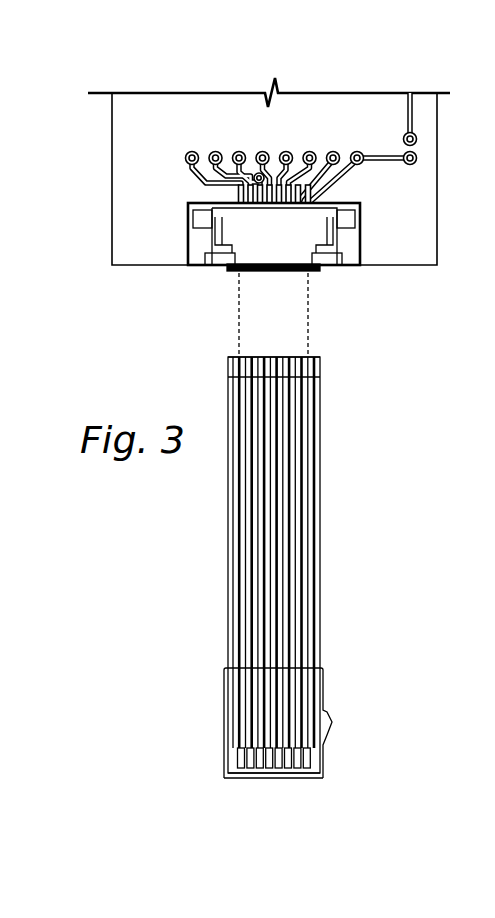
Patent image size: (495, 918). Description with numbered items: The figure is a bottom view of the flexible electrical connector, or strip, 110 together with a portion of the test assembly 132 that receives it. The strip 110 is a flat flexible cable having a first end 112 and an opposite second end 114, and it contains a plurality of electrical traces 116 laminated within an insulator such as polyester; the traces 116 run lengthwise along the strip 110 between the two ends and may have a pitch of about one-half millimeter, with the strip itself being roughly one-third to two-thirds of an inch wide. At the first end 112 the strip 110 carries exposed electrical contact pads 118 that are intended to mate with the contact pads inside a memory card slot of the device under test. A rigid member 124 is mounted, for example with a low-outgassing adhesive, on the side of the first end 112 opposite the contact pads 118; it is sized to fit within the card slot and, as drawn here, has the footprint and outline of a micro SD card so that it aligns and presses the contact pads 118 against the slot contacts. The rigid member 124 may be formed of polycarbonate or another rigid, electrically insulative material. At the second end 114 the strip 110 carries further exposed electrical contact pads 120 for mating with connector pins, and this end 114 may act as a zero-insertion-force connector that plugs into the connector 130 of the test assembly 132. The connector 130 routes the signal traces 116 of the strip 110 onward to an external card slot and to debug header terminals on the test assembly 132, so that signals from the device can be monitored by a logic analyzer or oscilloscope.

The flexible electrical connector strip 110 is at (232, 553).
The first end 112 is at (315, 778).
The second end 114 is at (313, 357).
The electrical traces 116 is at (297, 524).
The exposed electrical contact pads 118 is at (252, 763).
The exposed electrical contact pads 120 is at (258, 357).
The rigid member 124 is at (235, 676).
The connector 130 is at (290, 245).
The test assembly 132 is at (158, 131).